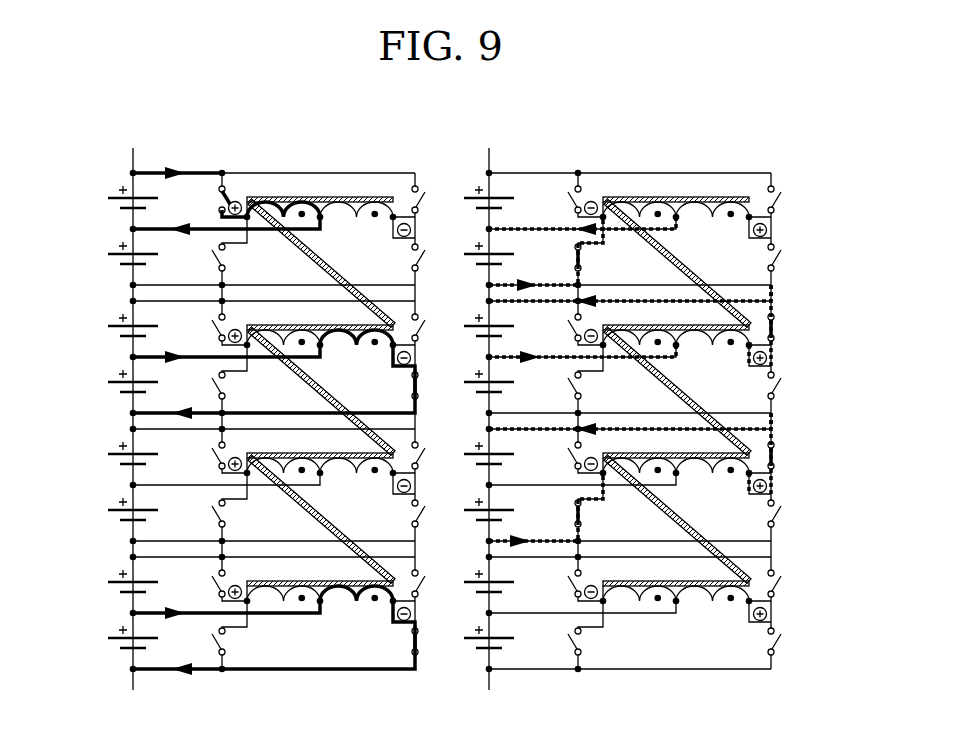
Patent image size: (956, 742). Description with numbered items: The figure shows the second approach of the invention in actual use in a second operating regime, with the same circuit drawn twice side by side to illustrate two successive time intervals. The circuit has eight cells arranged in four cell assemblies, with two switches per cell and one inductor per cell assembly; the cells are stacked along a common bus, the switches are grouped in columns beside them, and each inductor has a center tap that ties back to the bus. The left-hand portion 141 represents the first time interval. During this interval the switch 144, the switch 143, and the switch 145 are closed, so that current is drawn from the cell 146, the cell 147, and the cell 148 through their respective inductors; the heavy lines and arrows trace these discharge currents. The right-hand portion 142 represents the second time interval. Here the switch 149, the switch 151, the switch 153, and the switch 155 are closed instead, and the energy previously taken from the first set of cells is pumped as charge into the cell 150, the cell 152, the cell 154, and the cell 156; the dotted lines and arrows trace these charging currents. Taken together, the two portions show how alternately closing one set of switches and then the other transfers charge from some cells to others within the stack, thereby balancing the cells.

The portion 141 is at (300, 114).
The portion 142 is at (643, 114).
The switch 143 is at (412, 389).
The switch 144 is at (216, 206).
The switch 145 is at (418, 636).
The cell 146 is at (112, 206).
The cell 147 is at (117, 392).
The cell 148 is at (117, 648).
The switch 149 is at (585, 255).
The cell 150 is at (509, 258).
The switch 151 is at (777, 322).
The cell 152 is at (509, 329).
The switch 153 is at (777, 450).
The cell 154 is at (509, 456).
The switch 155 is at (586, 510).
The cell 156 is at (509, 513).